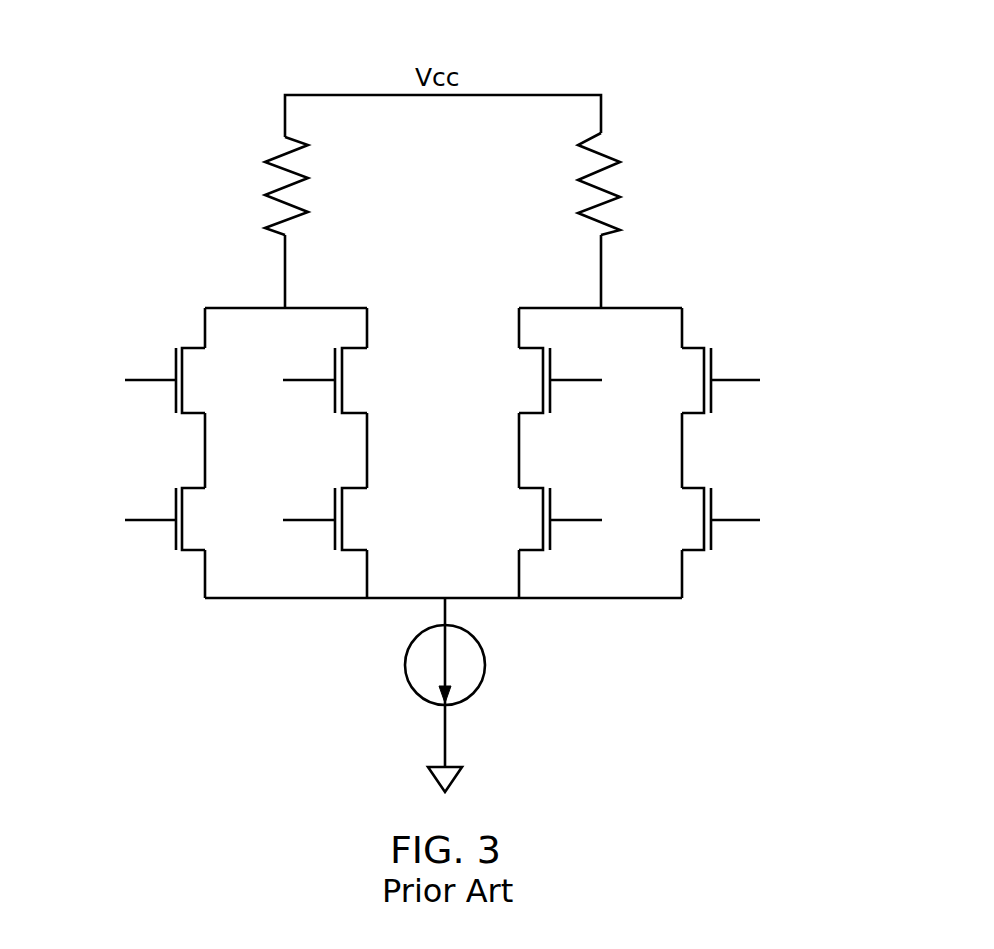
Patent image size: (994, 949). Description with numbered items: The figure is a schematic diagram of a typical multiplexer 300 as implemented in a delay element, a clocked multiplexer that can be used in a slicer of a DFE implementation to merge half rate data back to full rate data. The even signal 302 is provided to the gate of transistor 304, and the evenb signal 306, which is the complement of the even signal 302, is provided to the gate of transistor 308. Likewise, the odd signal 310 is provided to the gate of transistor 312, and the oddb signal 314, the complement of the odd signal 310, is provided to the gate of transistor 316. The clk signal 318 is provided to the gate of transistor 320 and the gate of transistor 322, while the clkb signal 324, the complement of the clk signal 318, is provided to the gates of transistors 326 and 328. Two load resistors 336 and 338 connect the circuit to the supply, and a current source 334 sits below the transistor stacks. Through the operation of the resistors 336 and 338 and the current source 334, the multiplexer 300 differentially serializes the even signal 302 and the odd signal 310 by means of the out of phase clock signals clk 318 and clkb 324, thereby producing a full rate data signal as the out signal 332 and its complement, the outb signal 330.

The multiplexer 300 is at (655, 64).
The even signal 302 is at (148, 522).
The transistor 304 is at (183, 520).
The evenb signal 306 is at (740, 522).
The transistor 308 is at (702, 522).
The odd signal 310 is at (310, 522).
The transistor 312 is at (343, 520).
The oddb signal 314 is at (572, 522).
The transistor 316 is at (542, 522).
The clk signal 318 is at (148, 382).
The transistor 320 is at (183, 380).
The transistor 322 is at (702, 385).
The clkb signal 324 is at (310, 382).
The transistor 326 is at (343, 380).
The transistor 328 is at (542, 385).
The outb signal 330 is at (288, 272).
The out signal 332 is at (597, 285).
The current source 334 is at (486, 662).
The resistor 336 is at (270, 197).
The resistor 338 is at (585, 180).